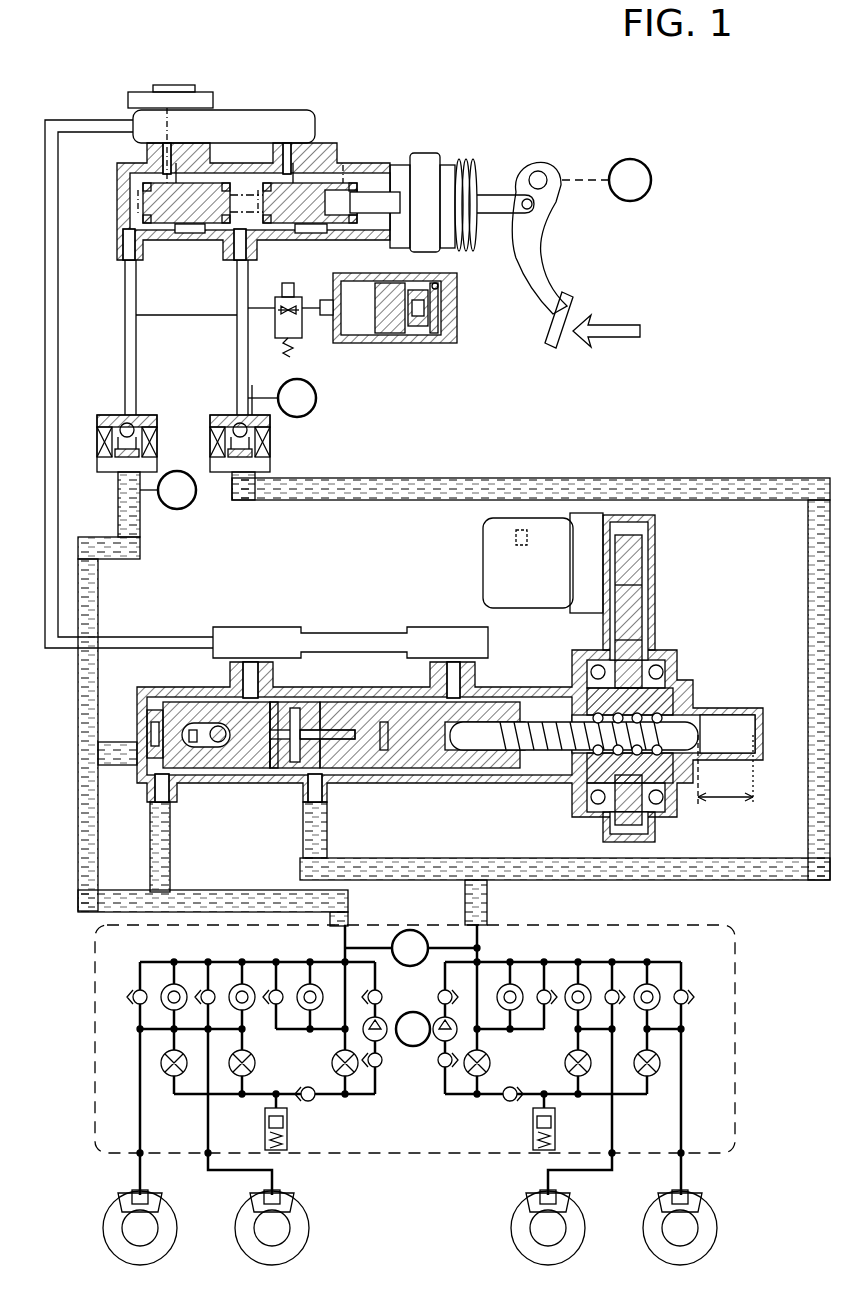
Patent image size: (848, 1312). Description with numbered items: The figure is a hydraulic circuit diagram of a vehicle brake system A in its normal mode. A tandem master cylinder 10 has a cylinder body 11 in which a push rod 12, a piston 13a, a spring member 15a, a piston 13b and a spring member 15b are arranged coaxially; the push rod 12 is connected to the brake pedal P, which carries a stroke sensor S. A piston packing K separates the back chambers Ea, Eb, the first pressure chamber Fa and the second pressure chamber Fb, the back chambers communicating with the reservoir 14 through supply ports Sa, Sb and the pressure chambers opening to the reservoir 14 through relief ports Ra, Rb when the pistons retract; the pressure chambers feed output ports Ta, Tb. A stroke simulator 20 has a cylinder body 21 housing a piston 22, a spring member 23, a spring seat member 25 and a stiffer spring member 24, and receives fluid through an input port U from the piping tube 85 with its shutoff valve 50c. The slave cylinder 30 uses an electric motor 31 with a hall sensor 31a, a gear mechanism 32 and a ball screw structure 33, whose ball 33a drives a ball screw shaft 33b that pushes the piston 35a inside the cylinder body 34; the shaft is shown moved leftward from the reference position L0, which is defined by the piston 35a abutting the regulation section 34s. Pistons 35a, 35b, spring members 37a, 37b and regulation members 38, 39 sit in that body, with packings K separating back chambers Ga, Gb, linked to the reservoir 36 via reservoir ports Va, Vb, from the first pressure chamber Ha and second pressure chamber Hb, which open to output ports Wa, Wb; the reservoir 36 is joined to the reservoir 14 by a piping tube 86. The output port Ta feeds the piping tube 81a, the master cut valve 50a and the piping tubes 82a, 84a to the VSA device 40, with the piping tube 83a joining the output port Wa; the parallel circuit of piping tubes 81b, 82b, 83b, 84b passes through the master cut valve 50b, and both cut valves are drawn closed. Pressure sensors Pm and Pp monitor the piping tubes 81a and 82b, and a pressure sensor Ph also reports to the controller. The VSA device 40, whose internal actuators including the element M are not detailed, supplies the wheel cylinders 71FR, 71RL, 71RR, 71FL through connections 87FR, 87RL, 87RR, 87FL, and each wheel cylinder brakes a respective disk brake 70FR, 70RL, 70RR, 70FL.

The master cylinder 10 is at (291, 442).
The cylinder body 11 is at (372, 163).
The push rod 12 is at (405, 205).
The piston 13a is at (344, 165).
The piston 13b is at (167, 108).
The reservoir 14 is at (225, 108).
The spring member 15a is at (258, 188).
The spring member 15b is at (137, 188).
The stroke simulator 20 is at (505, 320).
The cylinder body 21 is at (417, 329).
The piston 22 is at (392, 333).
The spring member 23 is at (418, 326).
The spring member 24 is at (436, 333).
The spring seat member 25 is at (436, 283).
The slave cylinder 30 is at (457, 681).
The electric motor 31 is at (482, 560).
The hall sensor 31a is at (515, 538).
The gear mechanism 32 is at (650, 625).
The ball screw structure 33 is at (617, 739).
The ball 33a is at (711, 738).
The ball screw shaft 33b is at (545, 750).
The cylinder body 34 is at (530, 687).
The regulation section 34s is at (603, 825).
The piston 35a is at (432, 768).
The piston 35b is at (232, 768).
The reservoir 36 is at (430, 627).
The spring member 37a is at (274, 702).
The spring member 37b is at (158, 708).
The regulation member 38 is at (305, 702).
The regulation member 39 is at (215, 726).
The VSA device 40 is at (698, 905).
The master cut valve 50a is at (272, 450).
The master cut valve 50b is at (142, 415).
The shutoff valve 50c is at (252, 390).
The wheel brake 70FL is at (131, 1227).
The wheel brake 70RR is at (318, 1227).
The wheel brake 70RL is at (540, 1227).
The disk brake 70FR is at (724, 1227).
The wheel cylinder 71FL is at (162, 1205).
The wheel cylinder 71RR is at (294, 1205).
The wheel cylinder 71RL is at (570, 1205).
The wheel cylinder 71FR is at (702, 1205).
The piping tube 81a is at (236, 355).
The piping tube 81b is at (124, 365).
The piping tube 82a is at (790, 462).
The piping tube 82b is at (80, 691).
The piping tube 83a is at (418, 862).
The piping tube 83b is at (150, 855).
The piping tube 84a is at (490, 898).
The piping tube 84b is at (205, 890).
The piping tube 85 is at (165, 316).
The piping tube 86 is at (44, 150).
The brake line 87FL is at (138, 1176).
The brake line 87RR is at (275, 1176).
The brake line 87RL is at (546, 1176).
The brake line 87FR is at (683, 1176).
The vehicle brake system A is at (578, 219).
The stroke sensor S is at (606, 180).
The brake pedal P is at (575, 297).
The first pressure chamber Fa is at (268, 183).
The second pressure chamber Fb is at (140, 198).
The back chamber Ea is at (312, 233).
The back chamber Eb is at (190, 233).
The relief port Ra is at (294, 163).
The relief port Rb is at (172, 163).
The supply port Sa is at (289, 143).
The supply port Sb is at (168, 143).
The output port Ta is at (246, 262).
The output port Tb is at (126, 262).
The piston packing K is at (147, 223).
The input port U is at (303, 320).
The pressure sensor Pm is at (282, 398).
The pressure sensor Pp is at (168, 490).
The pressure sensor Ph is at (410, 948).
The pump motor M is at (413, 1029).
The reservoir port Va is at (458, 665).
The reservoir port Vb is at (250, 680).
The output port Wa is at (318, 802).
The output port Wb is at (162, 802).
The back chamber Ga is at (395, 768).
The back chamber Gb is at (200, 768).
The first pressure chamber Ha is at (300, 768).
The second pressure chamber Hb is at (100, 755).
The reference position L0 is at (758, 785).